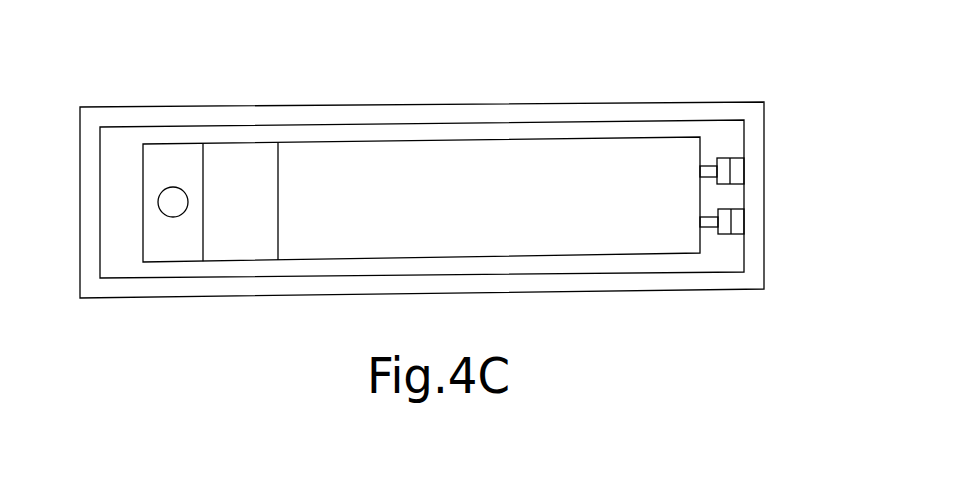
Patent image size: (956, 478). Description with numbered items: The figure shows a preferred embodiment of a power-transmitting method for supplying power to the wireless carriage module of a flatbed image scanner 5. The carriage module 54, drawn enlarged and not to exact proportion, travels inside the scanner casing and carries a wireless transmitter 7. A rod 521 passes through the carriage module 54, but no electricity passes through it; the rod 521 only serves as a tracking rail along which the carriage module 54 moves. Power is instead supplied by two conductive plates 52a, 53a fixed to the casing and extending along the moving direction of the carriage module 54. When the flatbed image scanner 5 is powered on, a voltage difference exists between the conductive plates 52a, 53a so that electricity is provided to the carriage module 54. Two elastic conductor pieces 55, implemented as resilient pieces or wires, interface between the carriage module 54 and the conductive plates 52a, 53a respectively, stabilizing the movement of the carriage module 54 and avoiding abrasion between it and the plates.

The flatbed image scanner 5 is at (505, 103).
The wireless transmitter 7 is at (238, 162).
The carriage module 54 is at (587, 150).
The elastic conductor pieces 55 is at (707, 170).
The conductive plate 52a is at (737, 168).
The conductive plate 53a is at (737, 218).
The rod 521 is at (158, 203).